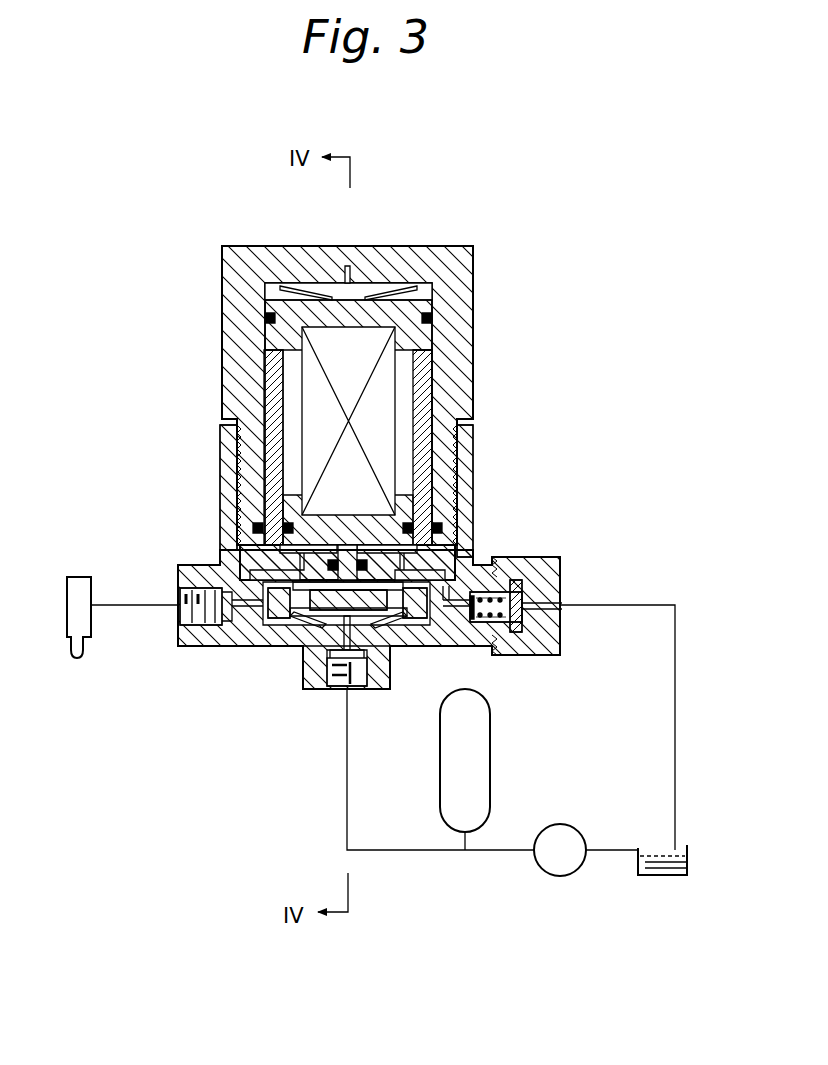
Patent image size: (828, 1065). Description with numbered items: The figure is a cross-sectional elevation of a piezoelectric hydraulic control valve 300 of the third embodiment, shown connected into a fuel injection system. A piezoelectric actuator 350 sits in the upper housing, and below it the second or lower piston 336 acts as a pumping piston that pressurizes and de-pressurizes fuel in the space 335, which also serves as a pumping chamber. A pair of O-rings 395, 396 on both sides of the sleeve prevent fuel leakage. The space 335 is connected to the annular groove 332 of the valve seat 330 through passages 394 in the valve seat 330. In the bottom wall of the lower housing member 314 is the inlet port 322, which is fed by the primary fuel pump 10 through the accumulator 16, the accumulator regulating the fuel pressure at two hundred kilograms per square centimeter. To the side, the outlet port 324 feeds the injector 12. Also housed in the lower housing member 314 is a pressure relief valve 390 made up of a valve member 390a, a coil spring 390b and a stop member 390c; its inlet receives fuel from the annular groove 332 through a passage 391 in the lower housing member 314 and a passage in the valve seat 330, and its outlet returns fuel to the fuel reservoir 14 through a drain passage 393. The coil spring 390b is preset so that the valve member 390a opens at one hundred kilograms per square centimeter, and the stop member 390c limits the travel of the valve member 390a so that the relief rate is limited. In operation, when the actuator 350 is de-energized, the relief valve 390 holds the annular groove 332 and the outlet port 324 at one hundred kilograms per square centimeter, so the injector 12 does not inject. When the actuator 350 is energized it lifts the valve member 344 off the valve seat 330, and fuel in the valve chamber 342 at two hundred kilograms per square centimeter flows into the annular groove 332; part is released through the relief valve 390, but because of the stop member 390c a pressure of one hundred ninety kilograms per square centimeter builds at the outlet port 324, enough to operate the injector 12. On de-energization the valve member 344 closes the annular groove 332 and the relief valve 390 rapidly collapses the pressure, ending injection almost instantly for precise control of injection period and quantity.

The piezoelectric hydraulic control valve 300 is at (558, 406).
The piezoelectric actuator 350 is at (296, 392).
The second or lower piston 336 is at (292, 470).
The O-ring 395 is at (258, 522).
The valve seat 330 is at (241, 548).
The outlet port 324 is at (183, 597).
The injector 12 is at (93, 622).
The lower housing member 314 is at (278, 635).
The valve chamber 342 is at (325, 620).
The inlet port 322 is at (352, 690).
The valve member 344 is at (416, 628).
The passages 394 is at (372, 548).
The space 335 is at (405, 472).
The O-ring 396 is at (437, 522).
The annular groove 332 is at (456, 548).
The pressure relief valve 390 is at (502, 583).
The drain passage 393 is at (548, 606).
The stop member 390c is at (548, 612).
The coil spring 390b is at (532, 636).
The valve member 390a is at (497, 640).
The passage 391 is at (460, 606).
The accumulator 16 is at (490, 765).
The primary fuel pump 10 is at (543, 876).
The fuel reservoir 14 is at (638, 860).